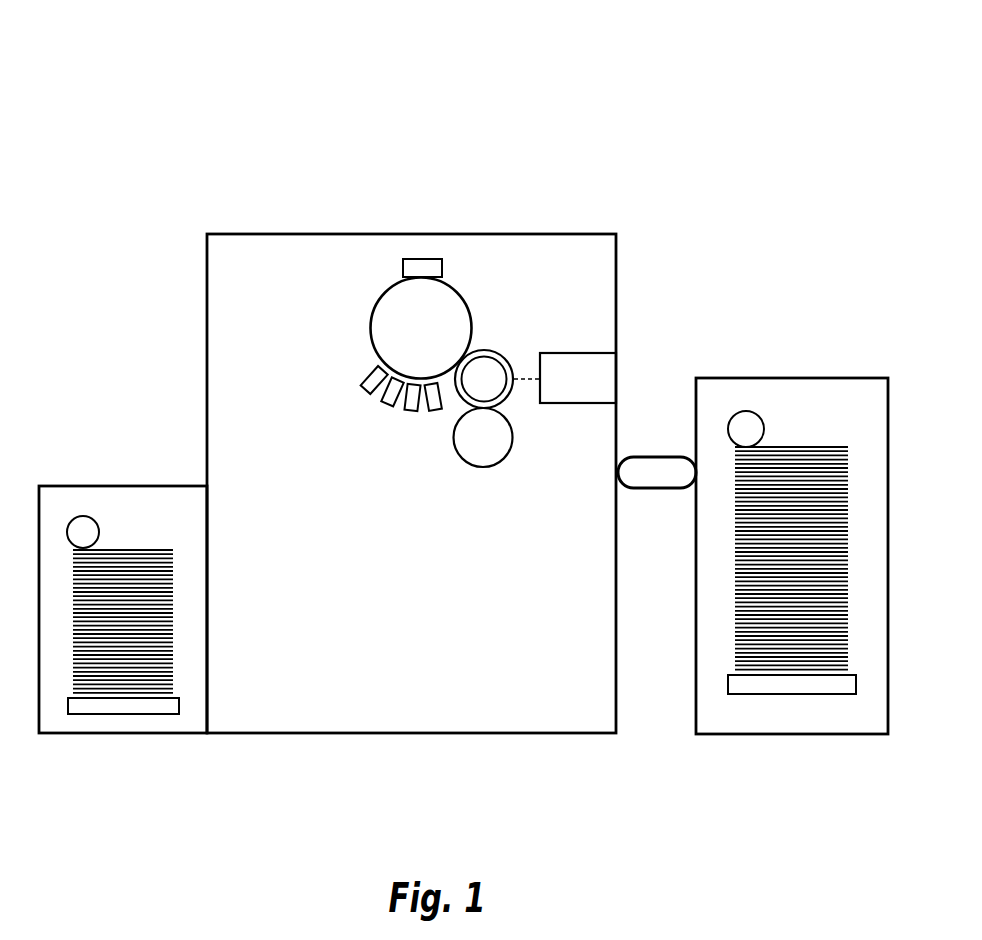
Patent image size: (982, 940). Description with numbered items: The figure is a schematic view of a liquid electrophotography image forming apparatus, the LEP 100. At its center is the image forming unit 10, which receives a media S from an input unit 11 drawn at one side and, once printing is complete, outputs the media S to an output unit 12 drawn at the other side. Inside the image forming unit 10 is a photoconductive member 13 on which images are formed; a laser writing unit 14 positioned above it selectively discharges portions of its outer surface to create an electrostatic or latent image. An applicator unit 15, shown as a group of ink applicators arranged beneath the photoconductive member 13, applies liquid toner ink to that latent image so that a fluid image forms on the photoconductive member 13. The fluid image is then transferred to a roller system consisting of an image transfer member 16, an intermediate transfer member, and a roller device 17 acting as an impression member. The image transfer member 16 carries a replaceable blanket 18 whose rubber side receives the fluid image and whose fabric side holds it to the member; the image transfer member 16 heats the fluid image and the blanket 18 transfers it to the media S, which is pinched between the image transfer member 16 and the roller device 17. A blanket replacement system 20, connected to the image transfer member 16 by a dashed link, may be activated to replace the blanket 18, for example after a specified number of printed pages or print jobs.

The LEP 100 is at (434, 100).
The image forming unit 10 is at (385, 233).
The input unit 11 is at (757, 377).
The output unit 12 is at (116, 486).
The photoconductive member 13 is at (410, 341).
The laser writing unit 14 is at (433, 258).
The applicator unit 15 is at (353, 390).
The image transfer member 16 is at (473, 391).
The roller device 17 is at (472, 449).
The blanket 18 is at (490, 351).
The blanket replacement system 20 is at (566, 391).
The media S is at (810, 447).